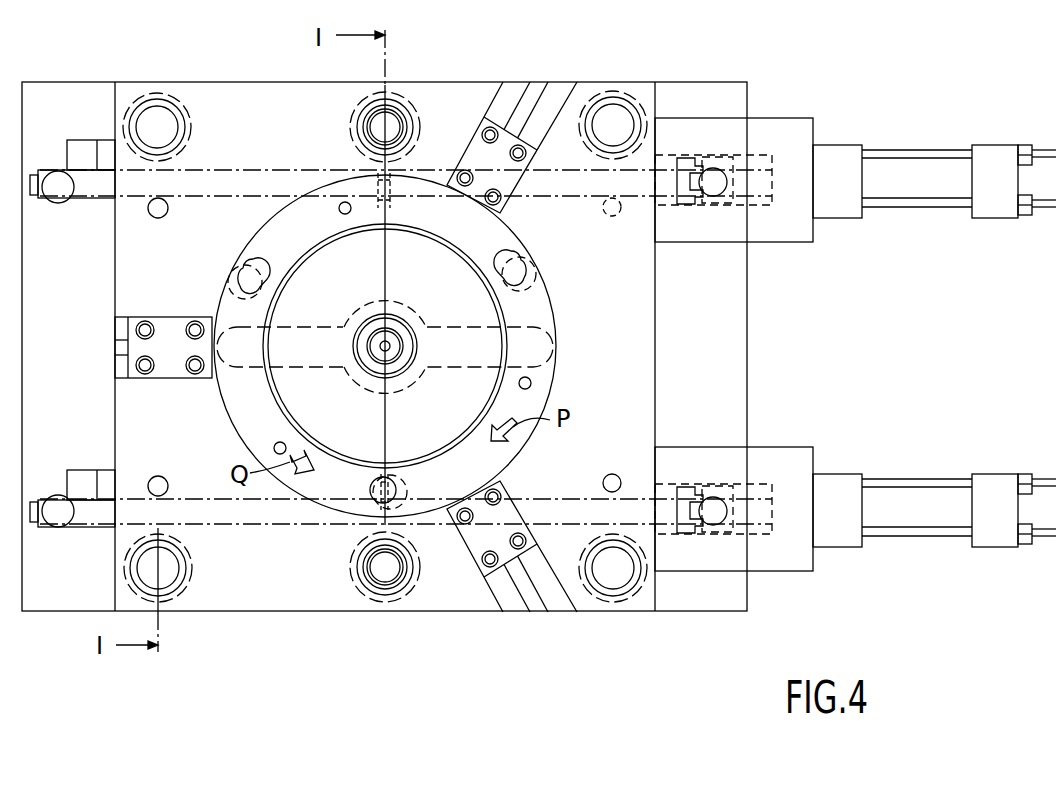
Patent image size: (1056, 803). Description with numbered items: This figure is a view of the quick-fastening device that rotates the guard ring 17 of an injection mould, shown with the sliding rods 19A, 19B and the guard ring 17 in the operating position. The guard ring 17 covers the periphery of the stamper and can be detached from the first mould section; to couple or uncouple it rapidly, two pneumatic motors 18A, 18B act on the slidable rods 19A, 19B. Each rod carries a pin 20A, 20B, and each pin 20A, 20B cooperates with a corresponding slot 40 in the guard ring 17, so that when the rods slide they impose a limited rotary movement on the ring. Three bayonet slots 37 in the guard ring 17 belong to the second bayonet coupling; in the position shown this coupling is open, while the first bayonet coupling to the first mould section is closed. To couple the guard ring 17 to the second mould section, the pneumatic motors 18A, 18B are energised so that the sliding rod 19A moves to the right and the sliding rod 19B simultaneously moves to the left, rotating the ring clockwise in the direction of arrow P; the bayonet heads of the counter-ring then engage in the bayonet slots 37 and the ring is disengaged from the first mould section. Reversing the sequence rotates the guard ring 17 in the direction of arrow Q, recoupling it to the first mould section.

The guard ring 17 is at (535, 312).
The pneumatic motor 18A is at (773, 138).
The pneumatic motor 18B is at (773, 468).
The sliding rod 19A is at (572, 190).
The sliding rod 19B is at (545, 500).
The pin 20A is at (366, 176).
The pin 20B is at (401, 505).
The bayonet slot 37 is at (262, 273).
The slot 40 is at (376, 196).